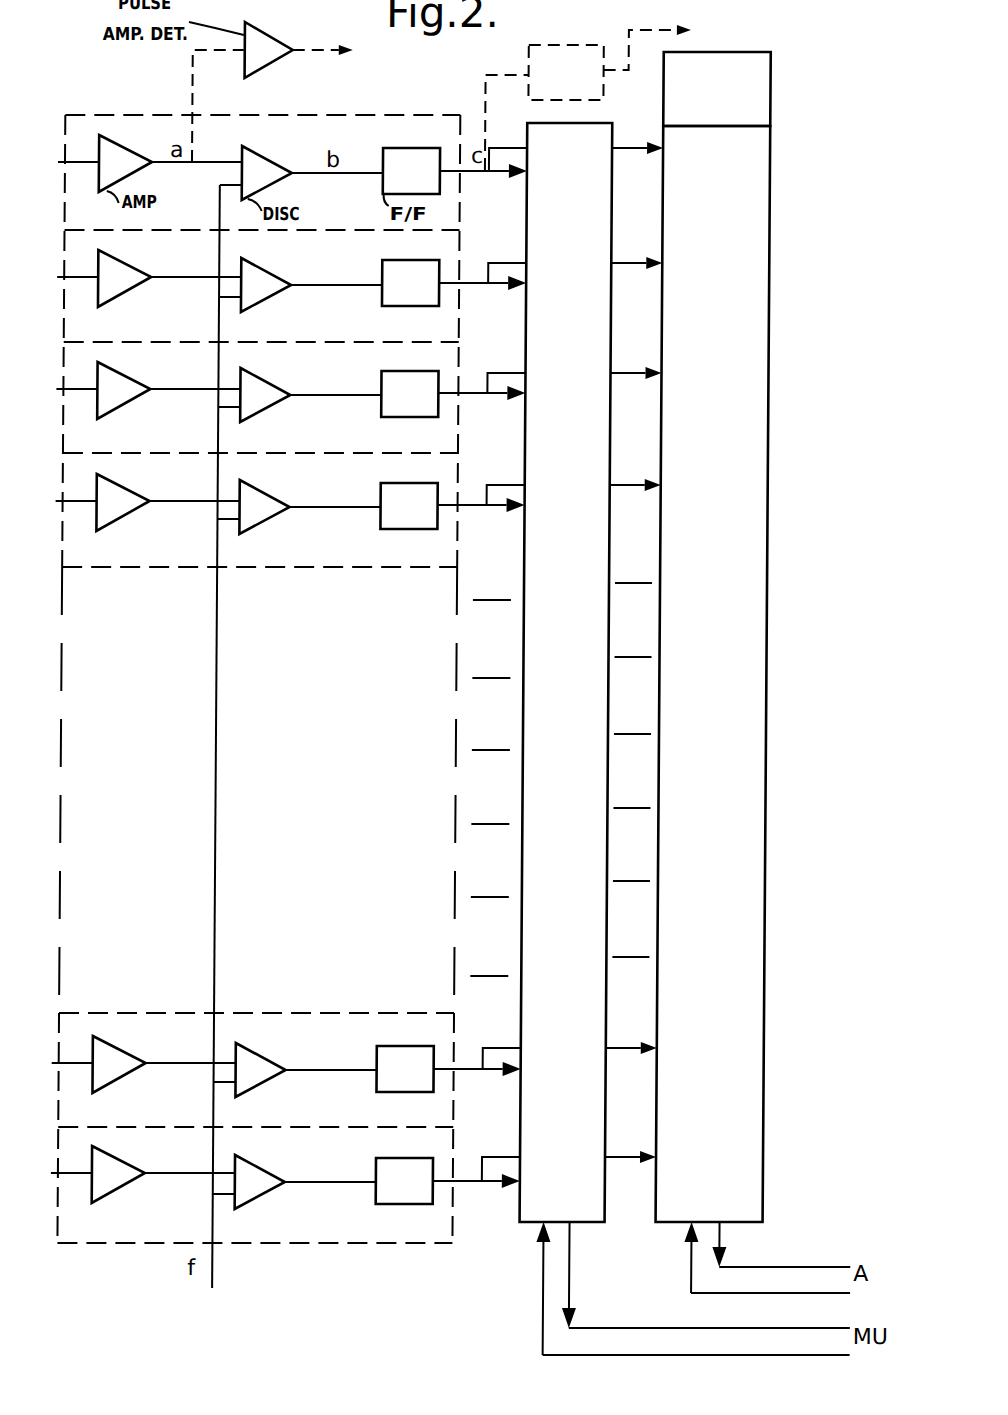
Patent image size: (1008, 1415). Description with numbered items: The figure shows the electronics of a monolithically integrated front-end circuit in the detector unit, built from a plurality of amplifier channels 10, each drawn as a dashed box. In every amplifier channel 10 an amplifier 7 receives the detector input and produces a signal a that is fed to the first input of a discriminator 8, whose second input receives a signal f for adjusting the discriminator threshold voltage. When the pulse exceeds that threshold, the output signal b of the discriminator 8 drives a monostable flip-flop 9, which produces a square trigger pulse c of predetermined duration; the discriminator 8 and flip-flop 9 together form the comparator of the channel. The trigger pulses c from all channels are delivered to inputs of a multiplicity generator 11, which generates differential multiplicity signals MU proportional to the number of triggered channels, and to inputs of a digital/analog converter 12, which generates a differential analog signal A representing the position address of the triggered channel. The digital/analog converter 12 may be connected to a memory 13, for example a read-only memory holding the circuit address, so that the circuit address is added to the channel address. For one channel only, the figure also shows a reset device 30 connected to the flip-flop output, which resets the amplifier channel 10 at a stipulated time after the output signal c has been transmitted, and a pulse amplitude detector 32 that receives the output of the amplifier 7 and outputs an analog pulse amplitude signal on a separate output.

The amplifier 7 is at (117, 174).
The discriminator 8 is at (260, 185).
The monostable flip-flop 9 is at (418, 182).
The amplifier channel 10 is at (349, 114).
The multiplicity generator 11 is at (576, 640).
The digital/analog converter 12 is at (732, 640).
The memory 13 is at (731, 101).
The reset device 30 is at (570, 45).
The pulse amplitude detector 32 is at (273, 34).